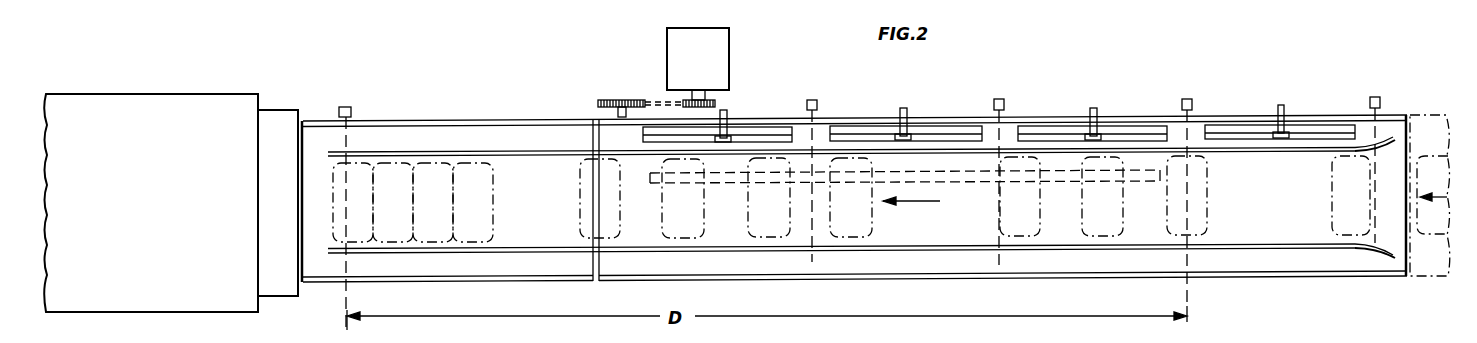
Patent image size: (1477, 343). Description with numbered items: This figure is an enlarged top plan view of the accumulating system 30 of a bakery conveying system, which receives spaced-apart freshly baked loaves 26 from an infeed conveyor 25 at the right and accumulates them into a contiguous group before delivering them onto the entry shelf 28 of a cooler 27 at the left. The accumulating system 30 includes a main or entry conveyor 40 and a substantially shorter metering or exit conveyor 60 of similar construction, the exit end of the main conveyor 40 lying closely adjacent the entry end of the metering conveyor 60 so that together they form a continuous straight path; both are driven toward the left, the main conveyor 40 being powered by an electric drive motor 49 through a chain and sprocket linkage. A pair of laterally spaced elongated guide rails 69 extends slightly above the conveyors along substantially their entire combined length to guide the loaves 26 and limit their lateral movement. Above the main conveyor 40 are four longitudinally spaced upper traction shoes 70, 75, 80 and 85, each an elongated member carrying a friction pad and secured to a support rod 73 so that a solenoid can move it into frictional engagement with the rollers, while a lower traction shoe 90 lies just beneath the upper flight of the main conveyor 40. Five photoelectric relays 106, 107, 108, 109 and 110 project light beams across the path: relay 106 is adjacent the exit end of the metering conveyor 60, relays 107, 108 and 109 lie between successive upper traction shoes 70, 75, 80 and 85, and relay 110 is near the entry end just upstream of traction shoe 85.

The infeed conveyor 25 is at (1441, 113).
The loaves 26 is at (1110, 240).
The cooler 27 is at (172, 94).
The entry shelf 28 is at (275, 110).
The accumulating system 30 is at (854, 167).
The main conveyor 40 is at (945, 280).
The drive motor 49 is at (678, 52).
The metering conveyor 60 is at (470, 283).
The guide rails 69 is at (538, 157).
The upper traction shoe 70 is at (773, 129).
The support rod 73 is at (728, 112).
The upper traction shoe 75 is at (870, 127).
The upper traction shoe 80 is at (1062, 127).
The upper traction shoe 85 is at (1247, 126).
The lower traction shoe 90 is at (990, 186).
The photoelectric relay 106 is at (351, 107).
The photoelectric relay 107 is at (812, 100).
The photoelectric relay 108 is at (999, 98).
The photoelectric relay 109 is at (1187, 98).
The photoelectric relay 110 is at (1375, 97).